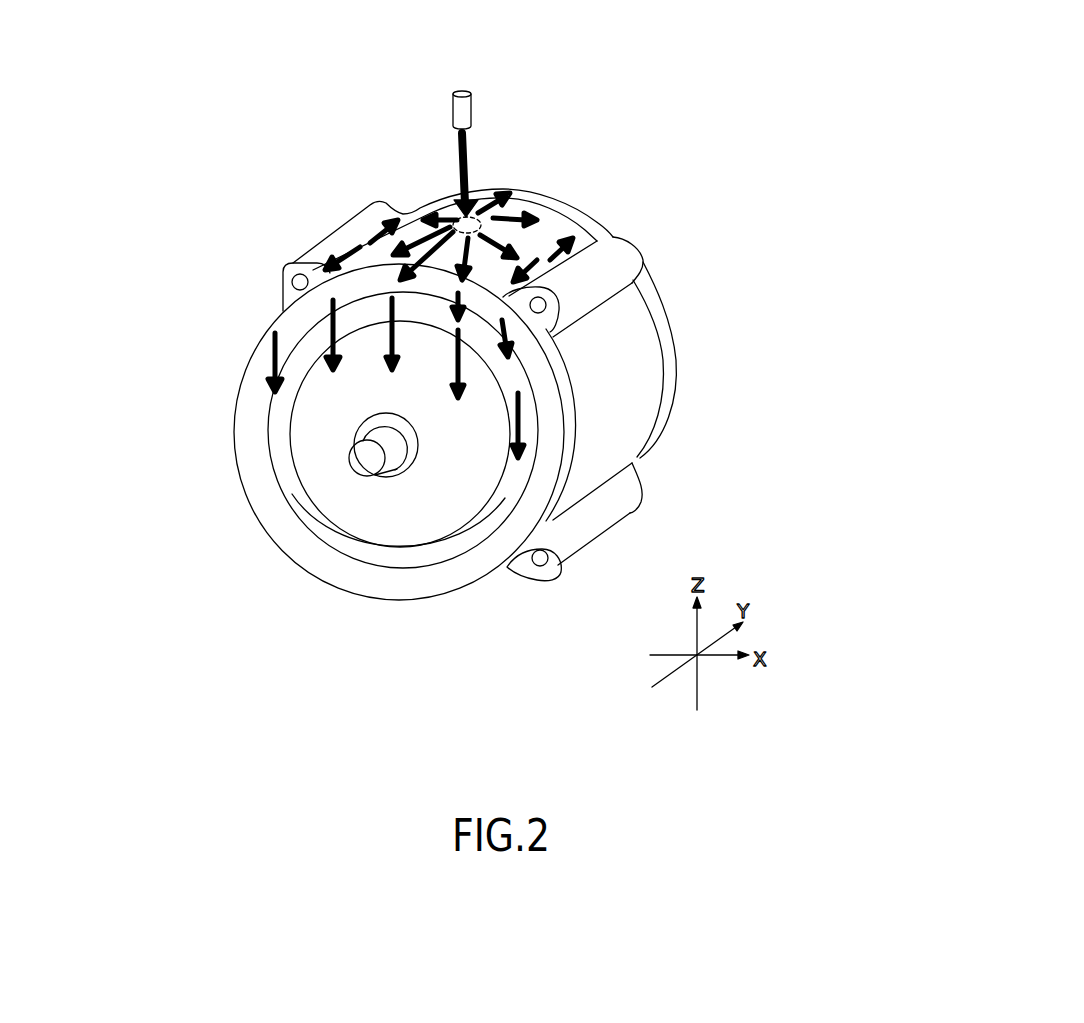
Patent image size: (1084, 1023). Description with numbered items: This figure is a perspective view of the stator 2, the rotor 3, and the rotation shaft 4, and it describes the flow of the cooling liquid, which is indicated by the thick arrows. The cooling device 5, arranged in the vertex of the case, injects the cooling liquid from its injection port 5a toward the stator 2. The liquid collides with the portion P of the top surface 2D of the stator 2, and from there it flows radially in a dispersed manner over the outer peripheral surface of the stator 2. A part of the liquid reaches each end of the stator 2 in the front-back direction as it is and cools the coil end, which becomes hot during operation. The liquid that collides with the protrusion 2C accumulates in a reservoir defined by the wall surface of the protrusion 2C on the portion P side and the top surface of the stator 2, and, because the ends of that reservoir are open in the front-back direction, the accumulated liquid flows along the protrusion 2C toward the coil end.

The stator 2 is at (347, 197).
The protrusion 2C is at (630, 247).
The top surface 2D is at (553, 227).
The rotor 3 is at (447, 513).
The rotation shaft 4 is at (368, 463).
The cooling device 5 is at (464, 92).
The injection port 5a is at (468, 135).
The portion hit by the cooling liquid P is at (470, 222).